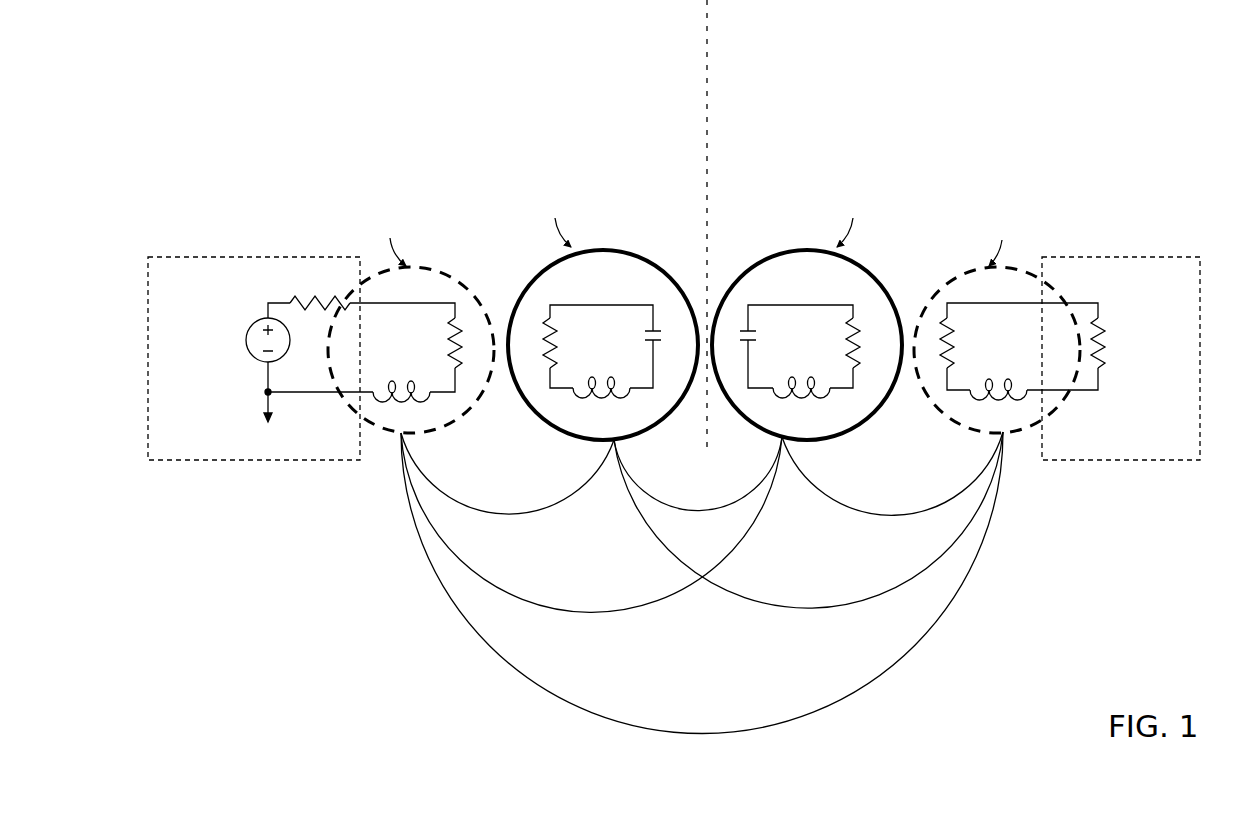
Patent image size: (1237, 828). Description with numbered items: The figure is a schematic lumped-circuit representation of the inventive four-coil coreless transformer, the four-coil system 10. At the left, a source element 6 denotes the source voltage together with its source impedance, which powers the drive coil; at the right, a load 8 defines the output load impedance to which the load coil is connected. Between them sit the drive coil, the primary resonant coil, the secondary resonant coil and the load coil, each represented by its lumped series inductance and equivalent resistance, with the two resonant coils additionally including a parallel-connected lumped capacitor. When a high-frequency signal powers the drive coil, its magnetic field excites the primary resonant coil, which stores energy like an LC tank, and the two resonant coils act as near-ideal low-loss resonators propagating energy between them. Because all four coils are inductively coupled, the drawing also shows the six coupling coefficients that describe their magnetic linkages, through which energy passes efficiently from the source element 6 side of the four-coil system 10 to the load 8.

The 4-coil system 10 is at (91, 89).
The source element 6 is at (248, 462).
The load 8 is at (1102, 462).